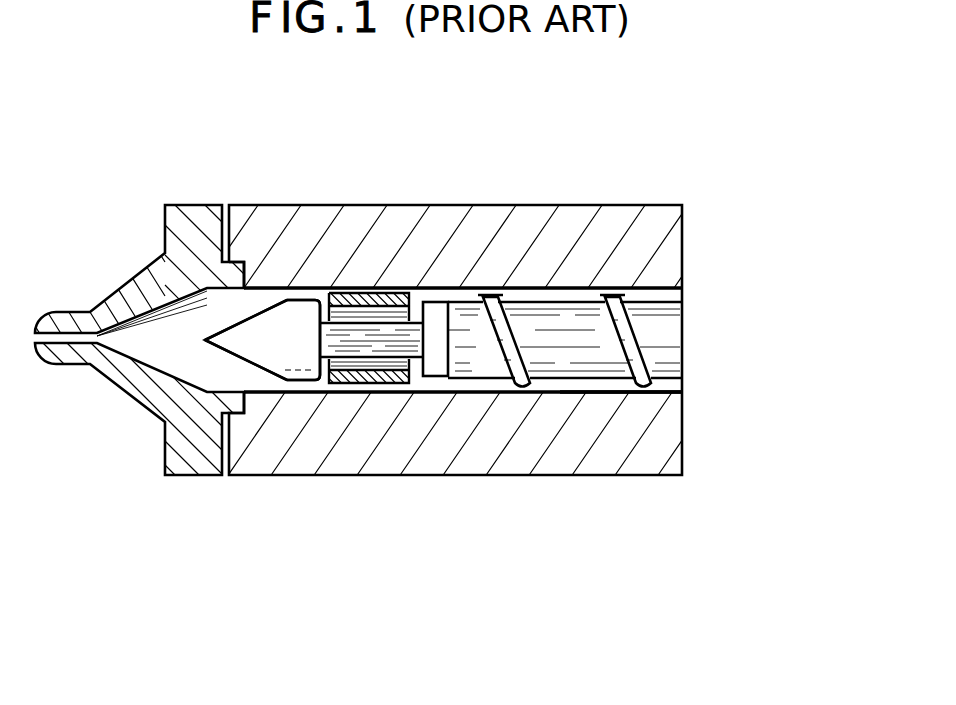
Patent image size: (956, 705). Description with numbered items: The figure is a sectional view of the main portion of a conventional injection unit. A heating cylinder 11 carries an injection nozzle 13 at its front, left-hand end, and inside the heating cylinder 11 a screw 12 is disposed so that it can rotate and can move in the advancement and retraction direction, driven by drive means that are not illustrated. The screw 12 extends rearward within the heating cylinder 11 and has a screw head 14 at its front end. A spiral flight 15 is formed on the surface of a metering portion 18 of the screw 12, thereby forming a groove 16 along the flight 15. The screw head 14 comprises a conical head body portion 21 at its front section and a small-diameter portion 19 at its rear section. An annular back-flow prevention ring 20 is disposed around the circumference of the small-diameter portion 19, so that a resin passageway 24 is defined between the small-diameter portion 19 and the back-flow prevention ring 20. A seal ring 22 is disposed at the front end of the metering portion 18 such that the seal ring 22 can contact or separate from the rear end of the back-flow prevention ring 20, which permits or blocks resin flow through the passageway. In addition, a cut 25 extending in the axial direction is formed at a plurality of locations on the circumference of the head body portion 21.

The heating cylinder 11 is at (453, 205).
The screw 12 is at (527, 327).
The injection nozzle 13 is at (192, 212).
The screw head 14 is at (282, 319).
The spiral flight 15 is at (628, 336).
The groove 16 is at (603, 390).
The metering portion 18 is at (487, 365).
The small-diameter portion 19 is at (363, 343).
The back-flow prevention ring 20 is at (385, 380).
The head body portion 21 is at (293, 352).
The seal ring 22 is at (435, 374).
The resin passageway 24 is at (360, 317).
The cut 25 is at (308, 374).